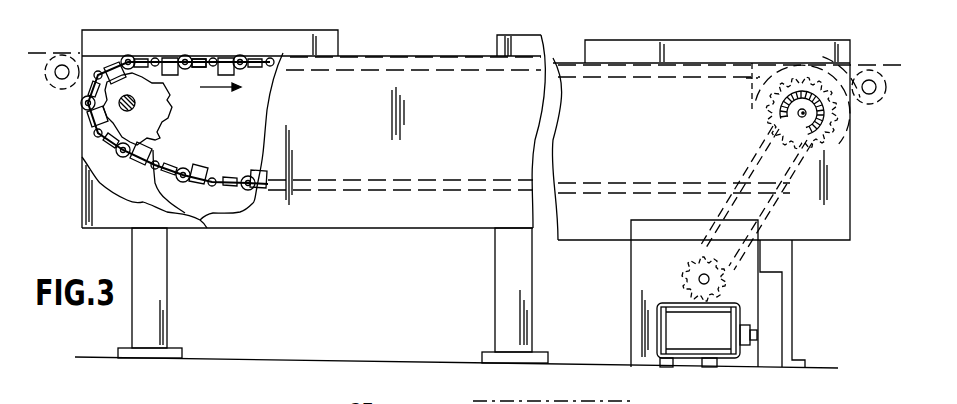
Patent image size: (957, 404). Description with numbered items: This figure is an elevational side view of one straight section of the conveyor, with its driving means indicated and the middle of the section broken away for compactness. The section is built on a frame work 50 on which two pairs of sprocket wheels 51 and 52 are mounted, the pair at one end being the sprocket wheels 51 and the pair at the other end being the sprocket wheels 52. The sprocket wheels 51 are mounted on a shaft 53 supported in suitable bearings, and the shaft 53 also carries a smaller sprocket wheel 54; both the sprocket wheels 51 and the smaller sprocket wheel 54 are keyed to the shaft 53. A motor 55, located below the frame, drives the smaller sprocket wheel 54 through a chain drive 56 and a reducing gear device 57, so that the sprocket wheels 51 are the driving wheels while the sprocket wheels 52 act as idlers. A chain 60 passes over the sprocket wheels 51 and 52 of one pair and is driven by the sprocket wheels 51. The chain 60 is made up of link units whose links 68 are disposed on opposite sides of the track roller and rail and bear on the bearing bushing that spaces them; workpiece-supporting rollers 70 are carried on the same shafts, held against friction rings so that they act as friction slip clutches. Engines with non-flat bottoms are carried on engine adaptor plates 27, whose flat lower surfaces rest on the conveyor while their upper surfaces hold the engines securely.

The engine adaptor plate 27 is at (637, 402).
The frame work 50 is at (167, 281).
The sprocket wheel 51 is at (837, 139).
The sprocket wheel 52 is at (96, 110).
The shaft 53 is at (797, 113).
The smaller sprocket wheel 54 is at (823, 117).
The motor 55 is at (660, 330).
The chain drive 56 is at (755, 161).
The reducing gear device 57 is at (645, 258).
The chain 60 is at (143, 202).
The link 68 is at (207, 168).
The workpiece-supporting roller 70 is at (207, 228).